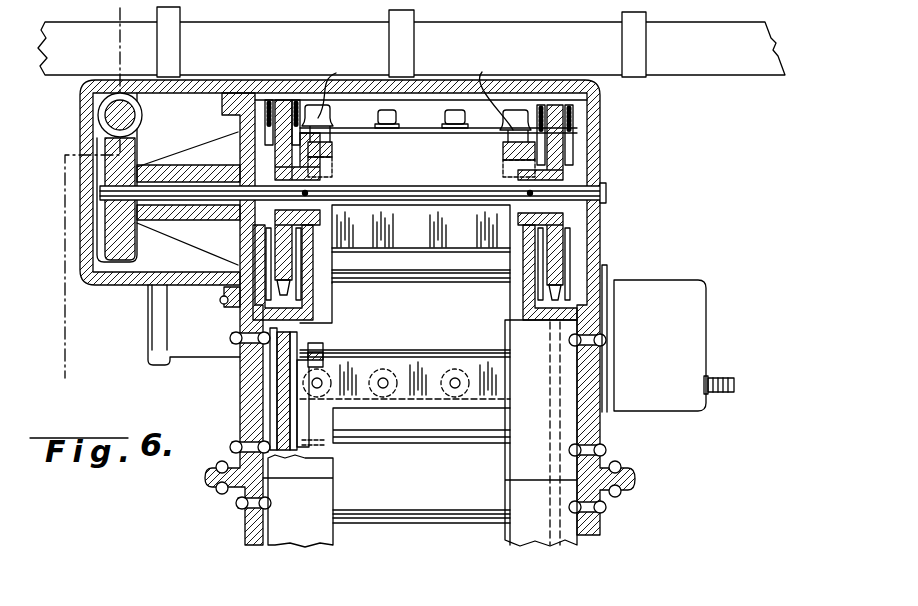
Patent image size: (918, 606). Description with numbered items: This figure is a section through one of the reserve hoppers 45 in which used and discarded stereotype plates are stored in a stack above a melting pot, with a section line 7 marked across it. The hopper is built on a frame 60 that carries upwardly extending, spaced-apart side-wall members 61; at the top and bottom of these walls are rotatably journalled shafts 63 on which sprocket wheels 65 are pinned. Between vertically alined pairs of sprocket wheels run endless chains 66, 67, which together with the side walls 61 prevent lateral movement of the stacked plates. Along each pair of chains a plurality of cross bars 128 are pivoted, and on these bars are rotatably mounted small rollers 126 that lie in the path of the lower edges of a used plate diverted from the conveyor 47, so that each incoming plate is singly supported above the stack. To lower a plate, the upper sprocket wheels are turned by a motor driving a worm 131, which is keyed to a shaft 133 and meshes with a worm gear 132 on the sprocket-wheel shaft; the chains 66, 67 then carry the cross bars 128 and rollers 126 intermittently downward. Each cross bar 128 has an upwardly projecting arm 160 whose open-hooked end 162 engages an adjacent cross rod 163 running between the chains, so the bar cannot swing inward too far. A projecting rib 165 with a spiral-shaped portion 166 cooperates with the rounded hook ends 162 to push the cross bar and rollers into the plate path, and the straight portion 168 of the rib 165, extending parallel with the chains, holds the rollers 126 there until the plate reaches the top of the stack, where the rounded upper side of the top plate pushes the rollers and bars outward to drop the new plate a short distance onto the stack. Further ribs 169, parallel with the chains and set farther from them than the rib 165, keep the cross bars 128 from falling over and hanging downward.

The section line 7- 7 is at (144, 12).
The hopper 45 is at (245, 531).
The conveyor 47 is at (433, 23).
The frame 60 is at (600, 528).
The side-wall member 61 is at (602, 233).
The shaft 63 is at (607, 192).
The sprocket wheel 65 is at (273, 187).
The endless chain 66 is at (605, 258).
The endless chain 67 is at (245, 293).
The roller 126 is at (442, 124).
The cross bar 128 is at (397, 450).
The worm 131 is at (145, 118).
The worm gear 132 is at (112, 236).
The shaft 133 is at (110, 117).
The upwardly projecting arm 160 is at (316, 352).
The open-hooked end 162 is at (418, 94).
The cross rod 163 is at (463, 338).
The projecting rib 165 is at (323, 257).
The spiral-shaped portion 166 is at (332, 146).
The straight portion 168 is at (322, 287).
The rib 169 is at (420, 433).